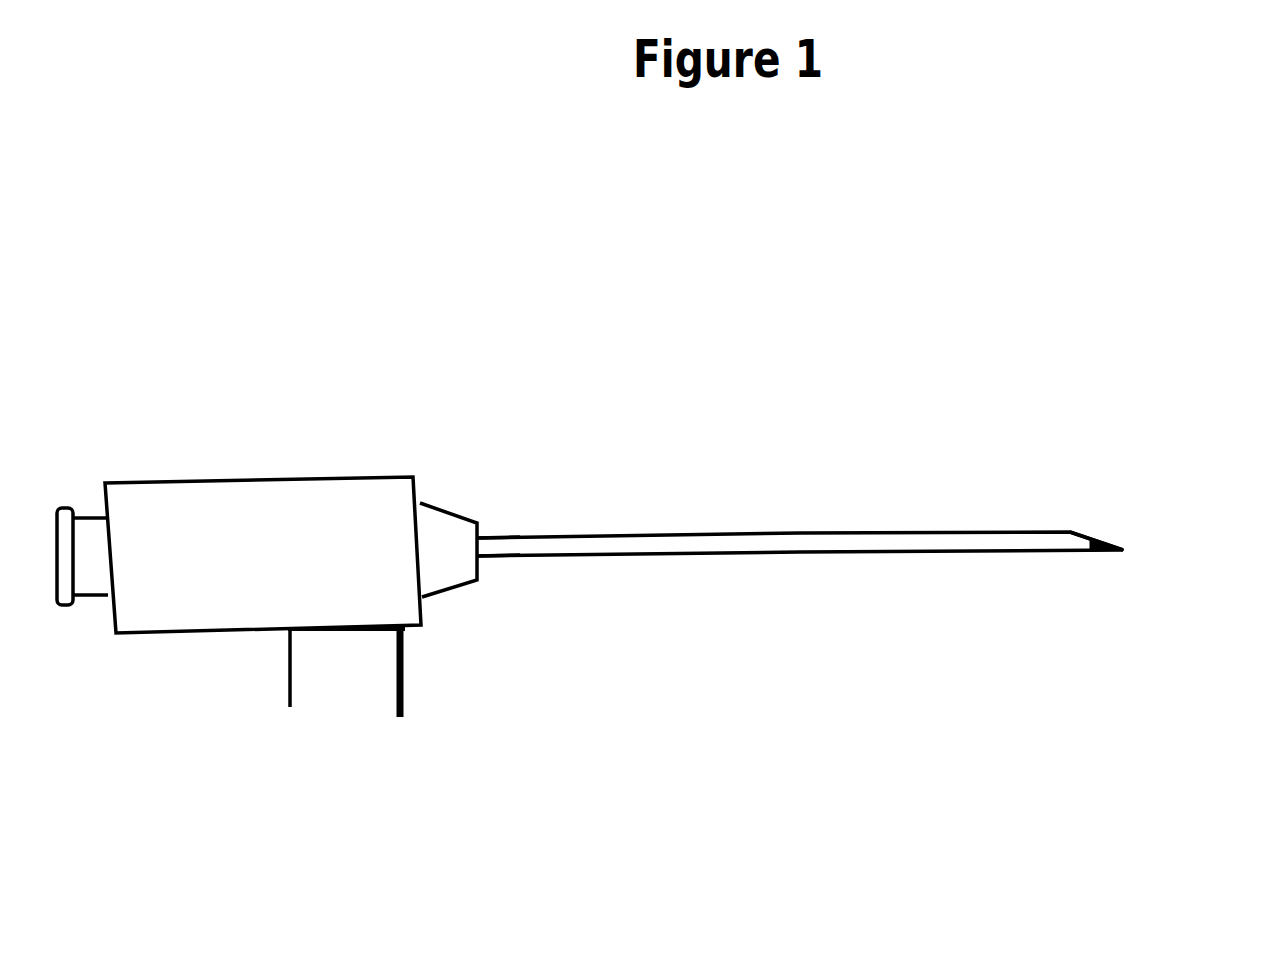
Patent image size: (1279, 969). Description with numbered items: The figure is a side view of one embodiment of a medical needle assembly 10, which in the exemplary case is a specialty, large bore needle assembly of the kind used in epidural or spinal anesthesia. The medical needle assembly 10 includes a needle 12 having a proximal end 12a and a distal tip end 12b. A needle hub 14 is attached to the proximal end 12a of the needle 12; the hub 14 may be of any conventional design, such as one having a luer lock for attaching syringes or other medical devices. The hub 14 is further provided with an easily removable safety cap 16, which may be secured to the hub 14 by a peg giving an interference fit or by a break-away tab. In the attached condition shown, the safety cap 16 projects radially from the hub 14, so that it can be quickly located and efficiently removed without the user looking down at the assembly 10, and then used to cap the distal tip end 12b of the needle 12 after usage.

The medical needle assembly 10 is at (963, 474).
The needle 12 is at (825, 547).
The proximal end 12a is at (555, 558).
The distal tip end 12b is at (1083, 552).
The needle hub 14 is at (313, 504).
The safety cap 16 is at (418, 686).